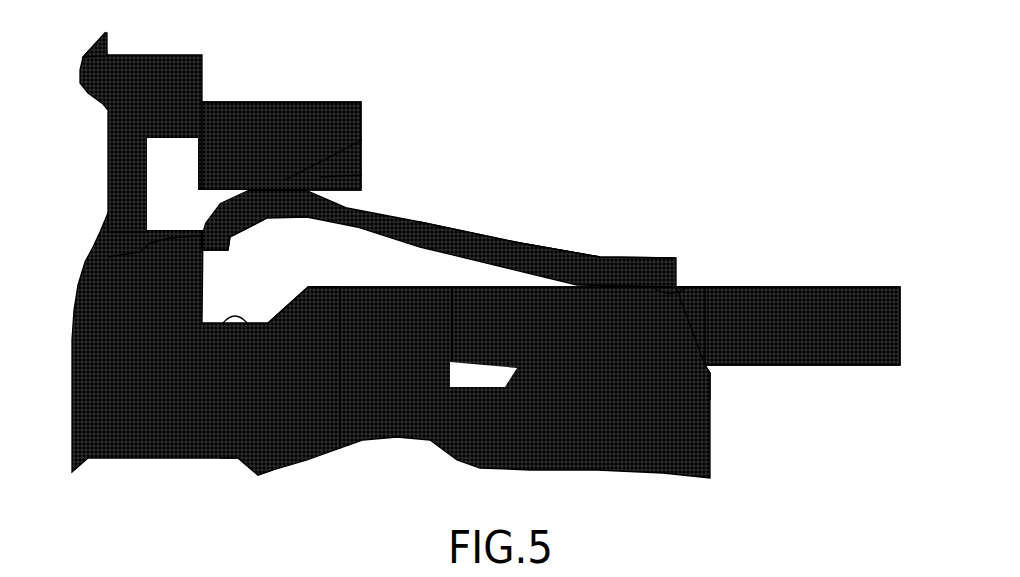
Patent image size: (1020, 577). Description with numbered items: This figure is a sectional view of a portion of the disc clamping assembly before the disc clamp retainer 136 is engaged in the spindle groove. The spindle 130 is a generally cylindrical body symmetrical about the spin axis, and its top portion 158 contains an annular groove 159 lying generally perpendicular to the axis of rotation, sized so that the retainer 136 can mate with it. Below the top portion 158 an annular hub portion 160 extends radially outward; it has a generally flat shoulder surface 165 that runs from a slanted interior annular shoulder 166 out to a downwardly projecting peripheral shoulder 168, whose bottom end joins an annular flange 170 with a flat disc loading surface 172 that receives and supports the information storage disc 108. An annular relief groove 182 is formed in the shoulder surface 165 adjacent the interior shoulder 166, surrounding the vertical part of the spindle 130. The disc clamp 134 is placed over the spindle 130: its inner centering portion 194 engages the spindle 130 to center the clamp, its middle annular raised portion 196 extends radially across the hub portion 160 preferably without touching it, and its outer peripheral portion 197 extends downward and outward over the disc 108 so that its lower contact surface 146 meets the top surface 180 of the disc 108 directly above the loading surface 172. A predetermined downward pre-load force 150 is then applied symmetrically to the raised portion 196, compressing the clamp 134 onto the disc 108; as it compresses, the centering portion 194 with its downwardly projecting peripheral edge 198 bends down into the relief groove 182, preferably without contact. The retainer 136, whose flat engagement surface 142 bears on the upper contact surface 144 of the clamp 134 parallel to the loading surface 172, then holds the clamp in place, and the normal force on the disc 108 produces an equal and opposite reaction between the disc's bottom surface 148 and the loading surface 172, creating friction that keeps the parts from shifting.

The information storage disc 108 is at (788, 296).
The spindle 130 is at (188, 344).
The disc clamp 134 is at (571, 217).
The disc clamp retainer 136 is at (295, 122).
The engagement surface 142 is at (350, 152).
The upper contact surface 144 is at (371, 173).
The lower contact surface 146 is at (706, 263).
The bottom surface 148 is at (788, 351).
The pre-load force 150 is at (248, 102).
The top portion 158 is at (82, 62).
The annular groove 159 is at (152, 184).
The hub portion 160 is at (235, 500).
The shoulder surface 165 is at (360, 308).
The slanted interior annular shoulder 166 is at (420, 337).
The peripheral shoulder 168 is at (578, 287).
The annular flange 170 is at (509, 400).
The disc loading surface 172 is at (732, 387).
The top surface 180 is at (755, 269).
The annular relief groove 182 is at (207, 352).
The centering portion 194 is at (250, 231).
The middle annular raised portion 196 is at (439, 236).
The outer peripheral portion 197 is at (598, 221).
The downwardly projecting peripheral edge 198 is at (128, 245).